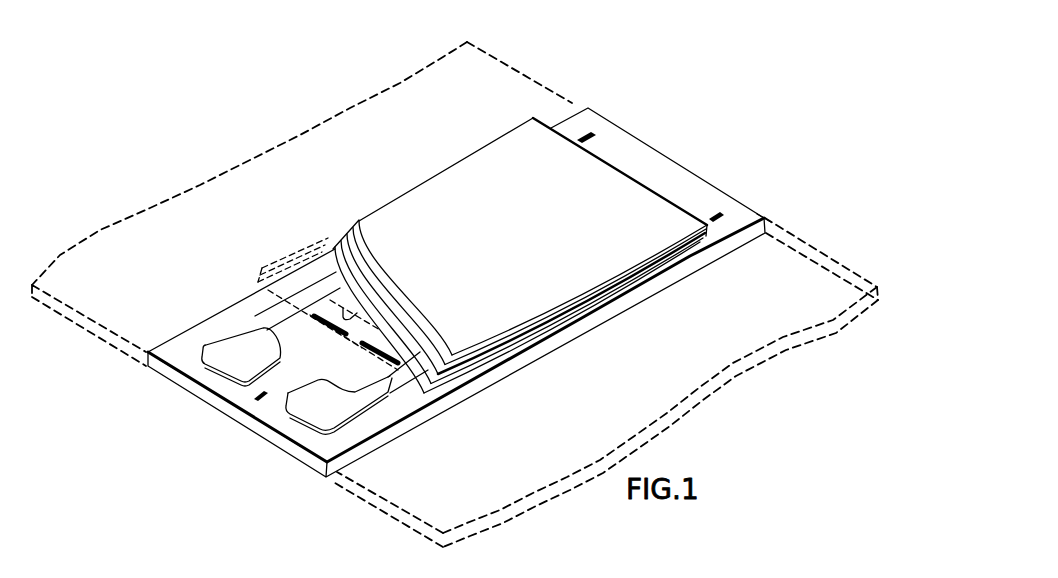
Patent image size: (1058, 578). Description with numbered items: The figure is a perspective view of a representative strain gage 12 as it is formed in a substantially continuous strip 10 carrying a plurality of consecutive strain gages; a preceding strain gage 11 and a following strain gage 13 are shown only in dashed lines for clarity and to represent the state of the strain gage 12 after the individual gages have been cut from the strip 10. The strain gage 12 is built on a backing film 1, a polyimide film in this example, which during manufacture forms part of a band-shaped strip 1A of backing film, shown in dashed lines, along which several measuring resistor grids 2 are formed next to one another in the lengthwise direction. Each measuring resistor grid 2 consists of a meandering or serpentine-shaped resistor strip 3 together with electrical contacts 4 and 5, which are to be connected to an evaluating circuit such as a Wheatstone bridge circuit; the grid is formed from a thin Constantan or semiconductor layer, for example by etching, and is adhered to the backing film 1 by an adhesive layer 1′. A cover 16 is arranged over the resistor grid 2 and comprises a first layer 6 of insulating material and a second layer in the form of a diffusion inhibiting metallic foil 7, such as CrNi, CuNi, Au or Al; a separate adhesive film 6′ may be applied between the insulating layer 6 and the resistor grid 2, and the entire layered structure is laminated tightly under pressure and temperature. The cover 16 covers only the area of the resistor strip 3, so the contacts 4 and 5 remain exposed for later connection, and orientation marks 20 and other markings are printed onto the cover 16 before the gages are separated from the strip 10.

The backing film 1 is at (154, 358).
The adhesive layer 1′ is at (185, 383).
The band-shaped strip of backing film 1A is at (522, 74).
The measuring resistor grid 2 is at (388, 393).
The resistor strip 3 is at (353, 327).
The electrical contact 4 is at (237, 367).
The electrical contact 5 is at (325, 415).
The first layer of insulating material 6 is at (335, 247).
The adhesive film 6′ is at (330, 258).
The diffusion inhibiting metallic foil 7 is at (363, 223).
The continuous strip 10 is at (665, 52).
The strain gage 11 is at (767, 205).
The strain gage 12 is at (634, 127).
The strain gage 13 is at (557, 82).
The cover 16 is at (258, 255).
The orientation marks 20 is at (398, 200).